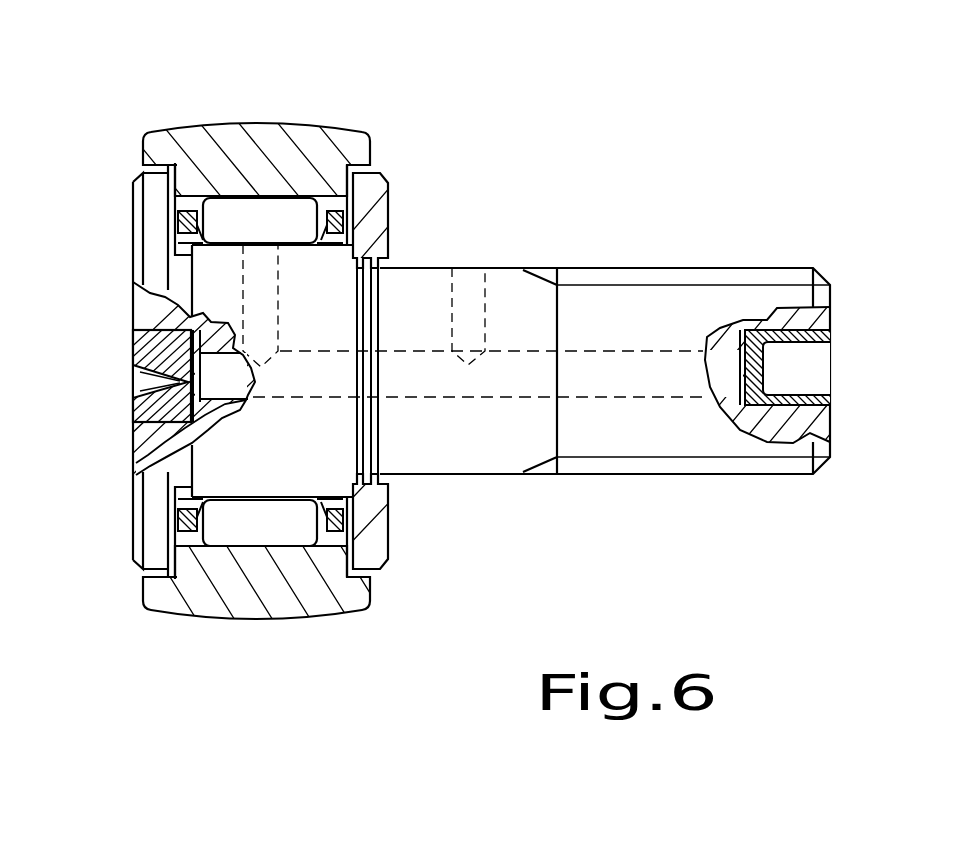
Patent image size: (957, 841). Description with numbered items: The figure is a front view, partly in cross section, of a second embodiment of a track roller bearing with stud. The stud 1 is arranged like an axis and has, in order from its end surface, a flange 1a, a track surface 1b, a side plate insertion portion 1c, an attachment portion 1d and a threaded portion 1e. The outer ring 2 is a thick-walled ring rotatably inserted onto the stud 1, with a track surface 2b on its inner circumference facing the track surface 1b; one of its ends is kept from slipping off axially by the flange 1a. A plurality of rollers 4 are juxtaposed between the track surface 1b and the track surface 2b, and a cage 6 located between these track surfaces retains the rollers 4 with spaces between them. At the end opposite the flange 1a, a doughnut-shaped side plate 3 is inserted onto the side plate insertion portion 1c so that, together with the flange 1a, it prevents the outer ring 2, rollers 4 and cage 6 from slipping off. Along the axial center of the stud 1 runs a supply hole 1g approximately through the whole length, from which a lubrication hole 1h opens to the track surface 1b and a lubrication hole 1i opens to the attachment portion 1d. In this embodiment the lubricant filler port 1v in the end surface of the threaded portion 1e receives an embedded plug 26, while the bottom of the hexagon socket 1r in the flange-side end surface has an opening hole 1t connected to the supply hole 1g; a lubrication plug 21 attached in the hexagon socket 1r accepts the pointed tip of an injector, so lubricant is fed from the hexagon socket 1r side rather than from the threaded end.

The stud 1 is at (622, 264).
The flange 1a is at (157, 202).
The track surface 1b is at (288, 243).
The side plate insertion portion 1c is at (370, 312).
The attachment portion 1d is at (510, 273).
The threaded portion 1e is at (751, 279).
The supply hole 1g is at (456, 392).
The lubrication hole 1h is at (248, 278).
The lubrication hole 1i is at (477, 300).
The hexagon socket 1r is at (133, 404).
The opening hole 1t is at (170, 430).
The lubricant filler port 1v is at (808, 390).
The outer ring 2 is at (348, 147).
The track surface 2b is at (226, 197).
The side plate 3 is at (373, 193).
The rollers 4 is at (257, 203).
The cage 6 is at (190, 548).
The lubrication plug 21 is at (135, 343).
The embedded plug 26 is at (830, 340).